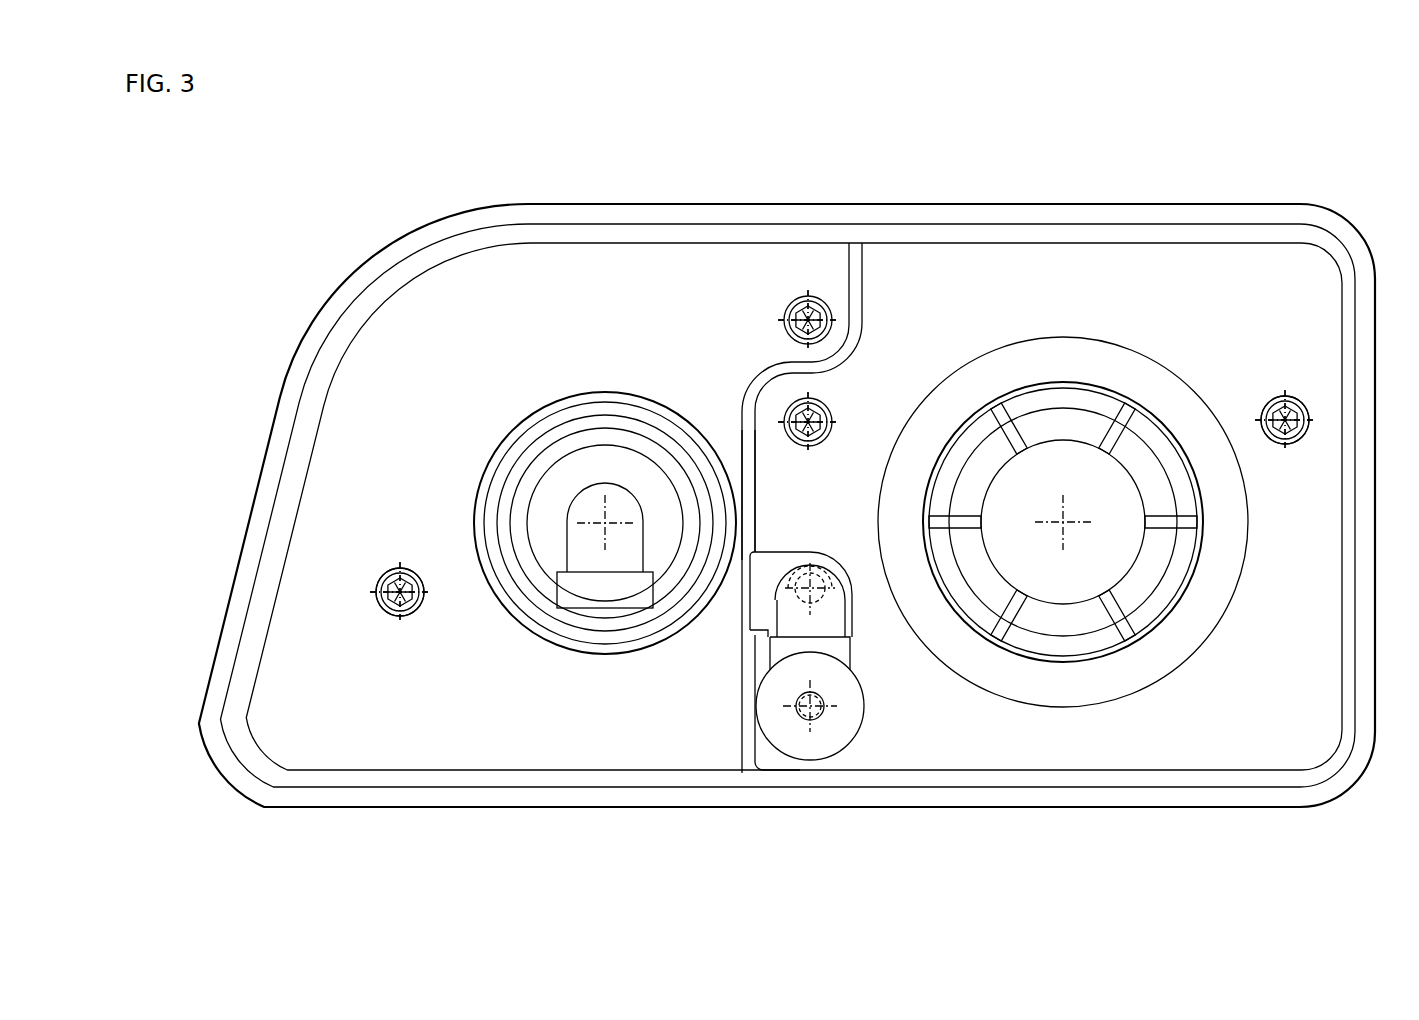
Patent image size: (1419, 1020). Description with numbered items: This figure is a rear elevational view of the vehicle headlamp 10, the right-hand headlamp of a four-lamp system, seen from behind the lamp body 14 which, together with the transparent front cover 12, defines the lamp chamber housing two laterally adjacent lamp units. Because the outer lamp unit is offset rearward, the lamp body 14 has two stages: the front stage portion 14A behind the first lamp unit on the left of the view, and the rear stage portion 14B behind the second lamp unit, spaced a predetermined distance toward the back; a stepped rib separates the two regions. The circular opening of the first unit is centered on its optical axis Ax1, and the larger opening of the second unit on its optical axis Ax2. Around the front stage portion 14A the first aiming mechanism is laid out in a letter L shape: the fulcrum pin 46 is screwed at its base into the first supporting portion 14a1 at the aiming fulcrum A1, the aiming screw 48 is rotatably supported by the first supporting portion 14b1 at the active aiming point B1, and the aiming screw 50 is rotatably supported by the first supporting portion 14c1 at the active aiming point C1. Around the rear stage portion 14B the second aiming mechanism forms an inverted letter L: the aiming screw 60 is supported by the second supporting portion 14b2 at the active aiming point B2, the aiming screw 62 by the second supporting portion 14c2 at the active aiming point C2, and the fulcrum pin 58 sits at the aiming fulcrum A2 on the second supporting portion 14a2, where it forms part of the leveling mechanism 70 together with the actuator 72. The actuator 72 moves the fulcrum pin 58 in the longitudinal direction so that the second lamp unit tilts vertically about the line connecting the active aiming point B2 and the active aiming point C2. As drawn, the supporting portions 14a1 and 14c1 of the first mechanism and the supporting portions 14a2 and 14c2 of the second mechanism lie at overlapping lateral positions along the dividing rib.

The vehicle headlamp 10 is at (385, 213).
The front cover 12 is at (333, 308).
The lamp body 14 is at (325, 397).
The front stage portion 14A is at (577, 308).
The rear stage portion 14B is at (1047, 308).
The first supporting portion 14a1 is at (807, 583).
The second supporting portion 14a2 is at (863, 750).
The first supporting portion 14b1 is at (382, 562).
The second supporting portion 14b2 is at (1282, 375).
The first supporting portion 14c1 is at (806, 277).
The second supporting portion 14c2 is at (790, 398).
The fulcrum pin 46 is at (840, 592).
The aiming screw 48 is at (420, 600).
The aiming screw 50 is at (826, 316).
The fulcrum pin 58 is at (795, 706).
The aiming screw 60 is at (1292, 445).
The aiming screw 62 is at (828, 420).
The leveling mechanism 70 is at (872, 700).
The actuator 72 is at (848, 718).
The aiming fulcrum A1 is at (822, 557).
The aiming fulcrum A2 is at (790, 716).
The active aiming point B1 is at (393, 617).
The active aiming point B2 is at (1272, 402).
The active aiming point C1 is at (797, 302).
The active aiming point C2 is at (822, 408).
The optical axis of first lamp unit Ax1 is at (603, 518).
The optical axis of second lamp unit Ax2 is at (1063, 522).